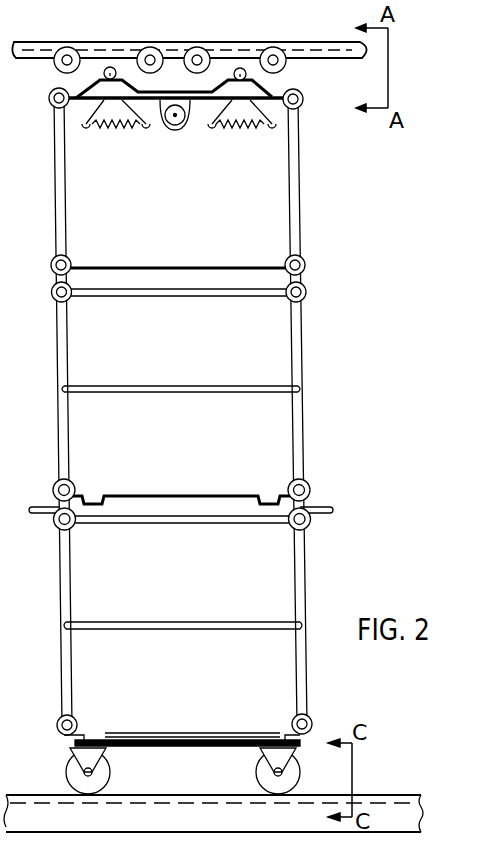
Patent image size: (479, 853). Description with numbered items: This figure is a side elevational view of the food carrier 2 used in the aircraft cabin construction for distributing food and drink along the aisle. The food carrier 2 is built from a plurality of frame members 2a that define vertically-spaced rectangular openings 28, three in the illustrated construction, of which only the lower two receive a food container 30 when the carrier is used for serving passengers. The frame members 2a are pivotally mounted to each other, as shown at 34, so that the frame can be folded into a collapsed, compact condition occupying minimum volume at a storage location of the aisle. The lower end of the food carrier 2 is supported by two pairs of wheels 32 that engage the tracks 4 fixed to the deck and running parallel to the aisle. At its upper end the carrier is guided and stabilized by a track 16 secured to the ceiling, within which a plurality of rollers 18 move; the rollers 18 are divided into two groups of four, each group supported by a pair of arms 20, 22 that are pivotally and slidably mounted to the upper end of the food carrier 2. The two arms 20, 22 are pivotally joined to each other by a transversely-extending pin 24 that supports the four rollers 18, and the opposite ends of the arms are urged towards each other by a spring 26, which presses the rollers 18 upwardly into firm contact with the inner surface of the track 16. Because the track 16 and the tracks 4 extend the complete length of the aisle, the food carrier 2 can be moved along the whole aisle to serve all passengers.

The food carrier 2 is at (300, 218).
The frame members 2a is at (55, 208).
The tracks 4 is at (50, 792).
The track 16 is at (35, 48).
The rollers 18 is at (281, 54).
The arm 20 is at (214, 120).
The arm 22 is at (270, 118).
The transversely-extending pin 24 is at (239, 68).
The spring 26 is at (196, 130).
The rectangular openings 28 is at (86, 340).
The food container 30 is at (88, 462).
The wheels 32 is at (110, 776).
The pivotal mounting 34 is at (306, 265).